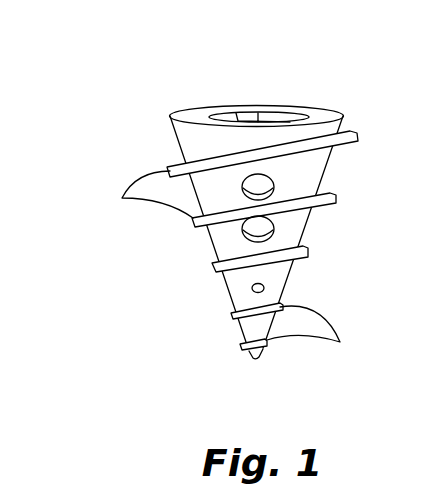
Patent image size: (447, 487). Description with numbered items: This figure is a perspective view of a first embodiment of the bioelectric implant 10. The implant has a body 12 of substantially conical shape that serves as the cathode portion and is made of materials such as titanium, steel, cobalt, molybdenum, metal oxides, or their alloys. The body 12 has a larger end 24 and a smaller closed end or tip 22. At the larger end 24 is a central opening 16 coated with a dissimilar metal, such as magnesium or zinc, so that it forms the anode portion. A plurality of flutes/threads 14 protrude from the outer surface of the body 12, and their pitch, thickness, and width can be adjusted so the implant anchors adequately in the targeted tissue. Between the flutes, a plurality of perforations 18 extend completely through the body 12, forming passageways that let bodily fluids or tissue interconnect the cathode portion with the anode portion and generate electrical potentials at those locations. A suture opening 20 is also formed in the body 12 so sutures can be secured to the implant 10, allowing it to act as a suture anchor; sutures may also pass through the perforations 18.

The bioelectric implant 10 is at (147, 92).
The body 12 is at (193, 137).
The flutes/threads 14 is at (231, 270).
The central opening 16 is at (247, 118).
The perforations 18 is at (258, 187).
The suture openings 20 is at (255, 290).
The tip 22 is at (258, 358).
The larger end 24 is at (197, 107).